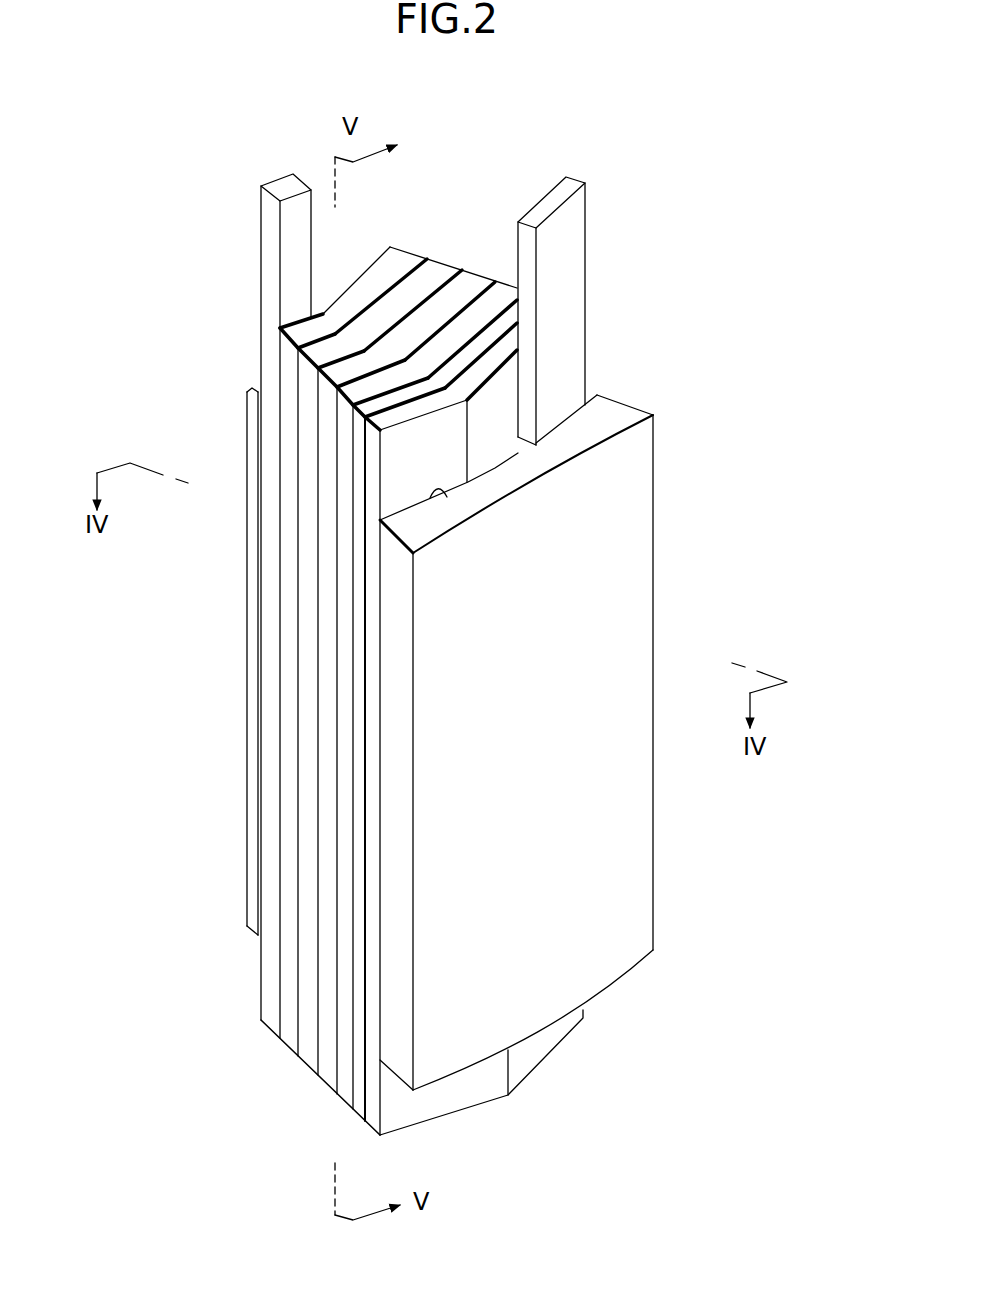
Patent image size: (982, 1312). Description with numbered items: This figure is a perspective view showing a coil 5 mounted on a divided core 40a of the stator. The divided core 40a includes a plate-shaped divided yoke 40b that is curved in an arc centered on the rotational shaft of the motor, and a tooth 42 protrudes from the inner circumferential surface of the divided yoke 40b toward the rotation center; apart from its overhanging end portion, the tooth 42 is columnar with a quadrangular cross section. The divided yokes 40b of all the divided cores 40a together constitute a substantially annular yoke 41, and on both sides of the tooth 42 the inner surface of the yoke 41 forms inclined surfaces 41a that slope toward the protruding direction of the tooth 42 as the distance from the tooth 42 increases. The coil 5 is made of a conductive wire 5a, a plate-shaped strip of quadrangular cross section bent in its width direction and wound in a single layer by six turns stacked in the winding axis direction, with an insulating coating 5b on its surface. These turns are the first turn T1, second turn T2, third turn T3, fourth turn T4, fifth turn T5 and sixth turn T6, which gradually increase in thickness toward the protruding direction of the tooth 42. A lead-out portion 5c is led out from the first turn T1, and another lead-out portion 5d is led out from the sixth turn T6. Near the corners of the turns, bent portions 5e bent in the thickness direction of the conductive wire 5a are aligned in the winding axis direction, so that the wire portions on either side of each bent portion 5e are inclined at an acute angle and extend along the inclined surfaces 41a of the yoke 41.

The coil 5 is at (410, 250).
The conductive wire 5a is at (369, 260).
The insulating coating 5b is at (398, 502).
The lead-out portion 5c is at (280, 183).
The lead-out portion 5d is at (571, 183).
The bent portion 5e is at (440, 383).
The first turn T1 is at (358, 293).
The second turn T2 is at (430, 277).
The third turn T3 is at (340, 362).
The fourth turn T4 is at (350, 386).
The fifth turn T5 is at (516, 300).
The sixth turn T6 is at (517, 327).
The divided core 40a is at (640, 508).
The divided yoke 40b is at (640, 447).
The yoke 41 is at (618, 413).
The inclined surface 41a is at (568, 410).
The tooth 42 is at (247, 405).